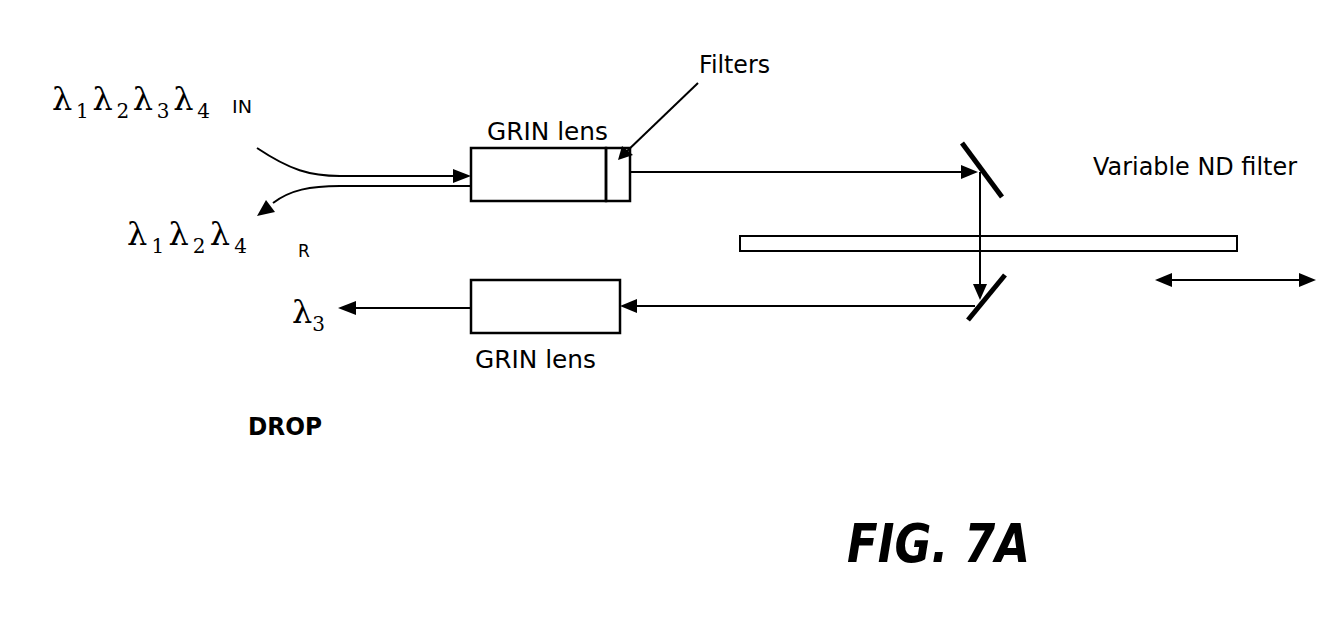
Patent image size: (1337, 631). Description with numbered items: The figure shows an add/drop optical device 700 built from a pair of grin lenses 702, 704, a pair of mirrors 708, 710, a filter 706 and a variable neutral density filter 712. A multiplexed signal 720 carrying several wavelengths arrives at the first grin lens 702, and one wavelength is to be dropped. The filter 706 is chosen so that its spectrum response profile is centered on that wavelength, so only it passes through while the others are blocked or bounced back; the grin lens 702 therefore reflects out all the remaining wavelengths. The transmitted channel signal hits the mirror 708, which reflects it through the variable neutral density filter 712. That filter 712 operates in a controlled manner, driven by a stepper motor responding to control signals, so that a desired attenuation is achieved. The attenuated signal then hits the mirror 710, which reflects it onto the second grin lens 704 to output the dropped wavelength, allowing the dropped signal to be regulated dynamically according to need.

The add/drop optical device 700 is at (735, 210).
The grin lens 702 is at (517, 185).
The second grin lens 704 is at (592, 297).
The filter 706 is at (623, 188).
The mirror 708 is at (1010, 154).
The mirror 710 is at (1010, 338).
The variable neutral density filter 712 is at (1028, 244).
The multiplexed signal 720 is at (313, 170).